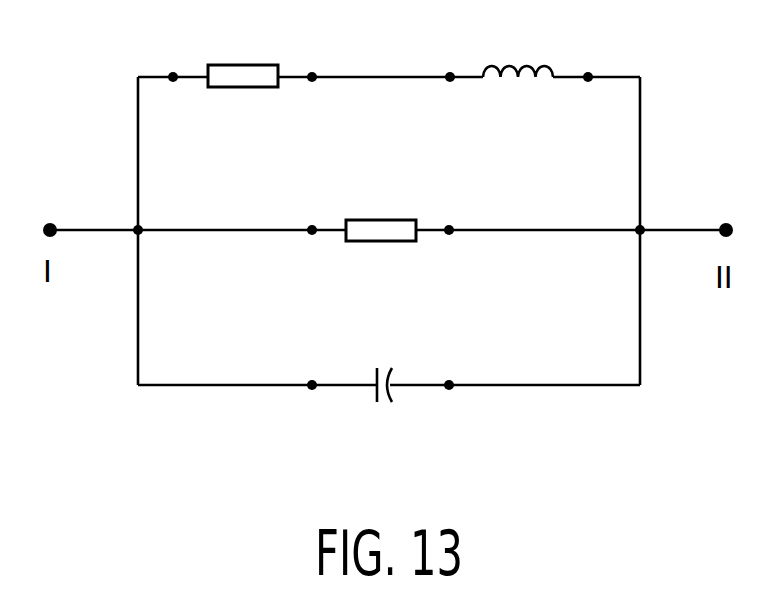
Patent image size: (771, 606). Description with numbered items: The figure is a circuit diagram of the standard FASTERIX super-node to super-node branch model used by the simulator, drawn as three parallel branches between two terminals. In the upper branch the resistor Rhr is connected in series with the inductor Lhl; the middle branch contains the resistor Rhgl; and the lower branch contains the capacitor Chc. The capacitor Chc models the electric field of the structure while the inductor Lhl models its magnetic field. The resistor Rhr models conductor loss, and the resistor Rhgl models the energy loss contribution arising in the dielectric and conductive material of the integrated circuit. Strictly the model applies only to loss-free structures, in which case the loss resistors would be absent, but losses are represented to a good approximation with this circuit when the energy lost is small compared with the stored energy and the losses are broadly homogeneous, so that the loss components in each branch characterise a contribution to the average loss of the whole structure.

The resistor Rhr is at (243, 54).
The inductor Lhl is at (518, 45).
The resistor Rhgl is at (381, 205).
The capacitor Chc is at (385, 410).